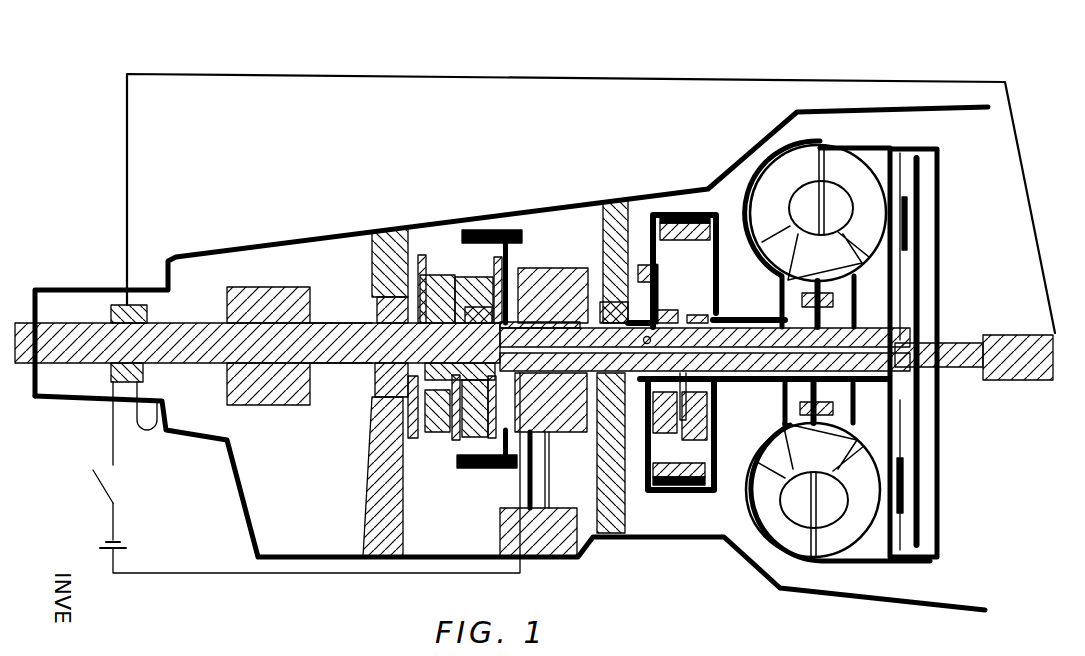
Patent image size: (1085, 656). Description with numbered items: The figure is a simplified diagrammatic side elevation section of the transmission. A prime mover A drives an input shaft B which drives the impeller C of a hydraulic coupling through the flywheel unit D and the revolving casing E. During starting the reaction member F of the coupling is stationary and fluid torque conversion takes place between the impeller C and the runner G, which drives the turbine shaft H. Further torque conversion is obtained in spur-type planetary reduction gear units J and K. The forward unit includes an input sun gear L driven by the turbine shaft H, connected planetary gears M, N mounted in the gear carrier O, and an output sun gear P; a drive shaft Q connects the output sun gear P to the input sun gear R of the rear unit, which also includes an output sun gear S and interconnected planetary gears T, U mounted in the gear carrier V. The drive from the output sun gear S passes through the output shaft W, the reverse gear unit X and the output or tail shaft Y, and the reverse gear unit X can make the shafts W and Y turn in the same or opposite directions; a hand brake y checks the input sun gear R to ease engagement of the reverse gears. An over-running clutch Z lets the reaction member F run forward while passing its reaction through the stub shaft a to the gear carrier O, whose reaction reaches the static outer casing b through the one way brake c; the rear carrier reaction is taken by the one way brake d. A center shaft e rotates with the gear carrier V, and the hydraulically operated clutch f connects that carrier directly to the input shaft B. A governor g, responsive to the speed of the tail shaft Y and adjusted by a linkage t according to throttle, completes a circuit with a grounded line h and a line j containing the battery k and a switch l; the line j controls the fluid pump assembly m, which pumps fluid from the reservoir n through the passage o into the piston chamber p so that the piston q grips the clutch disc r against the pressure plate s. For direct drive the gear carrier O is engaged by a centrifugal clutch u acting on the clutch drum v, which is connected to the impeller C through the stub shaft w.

The linkage t is at (233, 74).
The static outer casing b is at (548, 209).
The output or tail shaft Y is at (78, 333).
The governor g is at (140, 306).
The line h is at (148, 391).
The line j is at (112, 433).
The switch l is at (93, 482).
The battery k is at (106, 547).
The reverse gear unit X is at (258, 292).
The output shaft W is at (331, 326).
The one way brake d is at (380, 309).
The gear carrier V is at (457, 280).
The output sun gear S is at (436, 318).
The planetary reduction gear unit K is at (440, 280).
The input sun gear R is at (492, 315).
The planetary gear U is at (432, 432).
The hand brake y is at (475, 234).
The planetary gear T is at (470, 422).
The fluid pump assembly m is at (556, 292).
The center shaft e is at (578, 328).
The reservoir n is at (556, 516).
The one way brake c is at (608, 202).
The drive shaft Q is at (598, 320).
The output sun gear P is at (641, 264).
The contact rod x is at (636, 264).
The clutch drum v is at (713, 214).
The centrifugal clutch u is at (690, 228).
The planetary reduction gear unit J is at (672, 222).
The stub shaft a is at (729, 317).
The turbine shaft H is at (753, 320).
The stub shaft w is at (767, 318).
The gear carrier O is at (645, 420).
The planetary gear N is at (662, 422).
The planetary gear M is at (693, 422).
The input sun gear L is at (715, 394).
The impeller C is at (786, 192).
The runner G is at (851, 172).
The reaction member F is at (816, 247).
The over-running clutch Z is at (806, 296).
The revolving casing E is at (891, 152).
The pressure plate s is at (906, 172).
The clutch disc r is at (919, 262).
The hydraulically operated clutch f is at (906, 232).
The flywheel unit D is at (938, 256).
The piston chamber p is at (922, 276).
The piston q is at (918, 287).
The input shaft B is at (951, 345).
The prime mover A is at (1005, 340).
The passage o is at (637, 342).